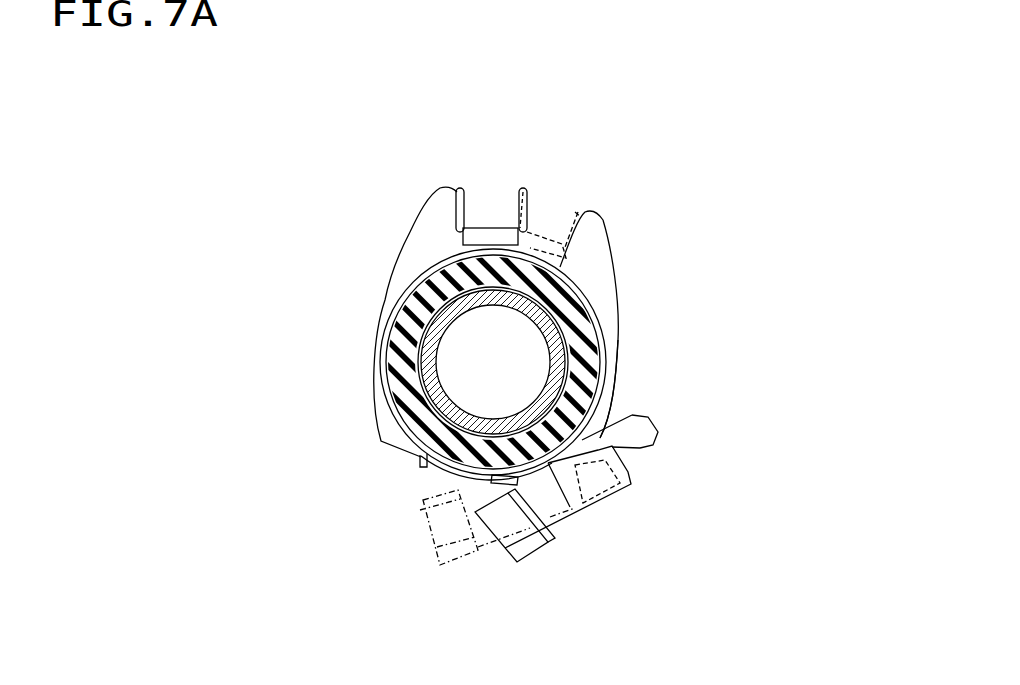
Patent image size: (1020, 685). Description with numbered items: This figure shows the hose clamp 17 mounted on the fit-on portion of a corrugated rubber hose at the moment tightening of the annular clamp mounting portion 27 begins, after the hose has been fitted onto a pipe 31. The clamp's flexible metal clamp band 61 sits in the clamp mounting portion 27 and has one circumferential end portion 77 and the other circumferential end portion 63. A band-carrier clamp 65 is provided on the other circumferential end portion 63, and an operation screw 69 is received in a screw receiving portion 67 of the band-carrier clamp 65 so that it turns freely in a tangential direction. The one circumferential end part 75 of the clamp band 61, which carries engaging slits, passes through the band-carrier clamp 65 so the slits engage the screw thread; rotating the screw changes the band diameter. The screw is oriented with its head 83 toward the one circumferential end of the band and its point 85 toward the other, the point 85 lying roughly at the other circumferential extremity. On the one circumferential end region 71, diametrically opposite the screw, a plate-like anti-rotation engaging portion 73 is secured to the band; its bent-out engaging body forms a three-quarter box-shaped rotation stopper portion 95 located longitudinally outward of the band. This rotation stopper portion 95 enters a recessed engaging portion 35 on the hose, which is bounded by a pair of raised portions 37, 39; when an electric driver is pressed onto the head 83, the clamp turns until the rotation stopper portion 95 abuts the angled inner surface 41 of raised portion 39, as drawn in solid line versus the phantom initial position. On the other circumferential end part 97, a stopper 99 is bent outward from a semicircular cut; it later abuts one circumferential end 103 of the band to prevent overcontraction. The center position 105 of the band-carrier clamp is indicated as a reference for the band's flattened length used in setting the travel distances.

The hose clamp 17 is at (369, 353).
The annular clamp mounting portion 27 is at (579, 290).
The pipe 31 is at (452, 318).
The recessed engaging portion 35 is at (547, 234).
The raised portion 37 is at (596, 238).
The raised portion 39 is at (437, 214).
The inner surface 41 is at (477, 226).
The clamp band 61 is at (395, 318).
The other circumferential end portion 63 is at (620, 397).
The band-carrier clamp 65 is at (612, 498).
The screw receiving portion 67 is at (578, 517).
The operation screw 69 is at (531, 576).
The one circumferential end region 71 is at (607, 340).
The anti-rotation engaging portion 73 is at (494, 199).
The one circumferential end part 75 is at (653, 445).
The one circumferential end portion 77 is at (557, 532).
The head 83 is at (494, 549).
The point 85 is at (648, 417).
The rotation stopper portion 95 is at (461, 188).
The other circumferential end part 97 is at (437, 470).
The stopper 99 is at (416, 452).
The one circumferential end 103 is at (500, 481).
The center position 105 is at (522, 428).